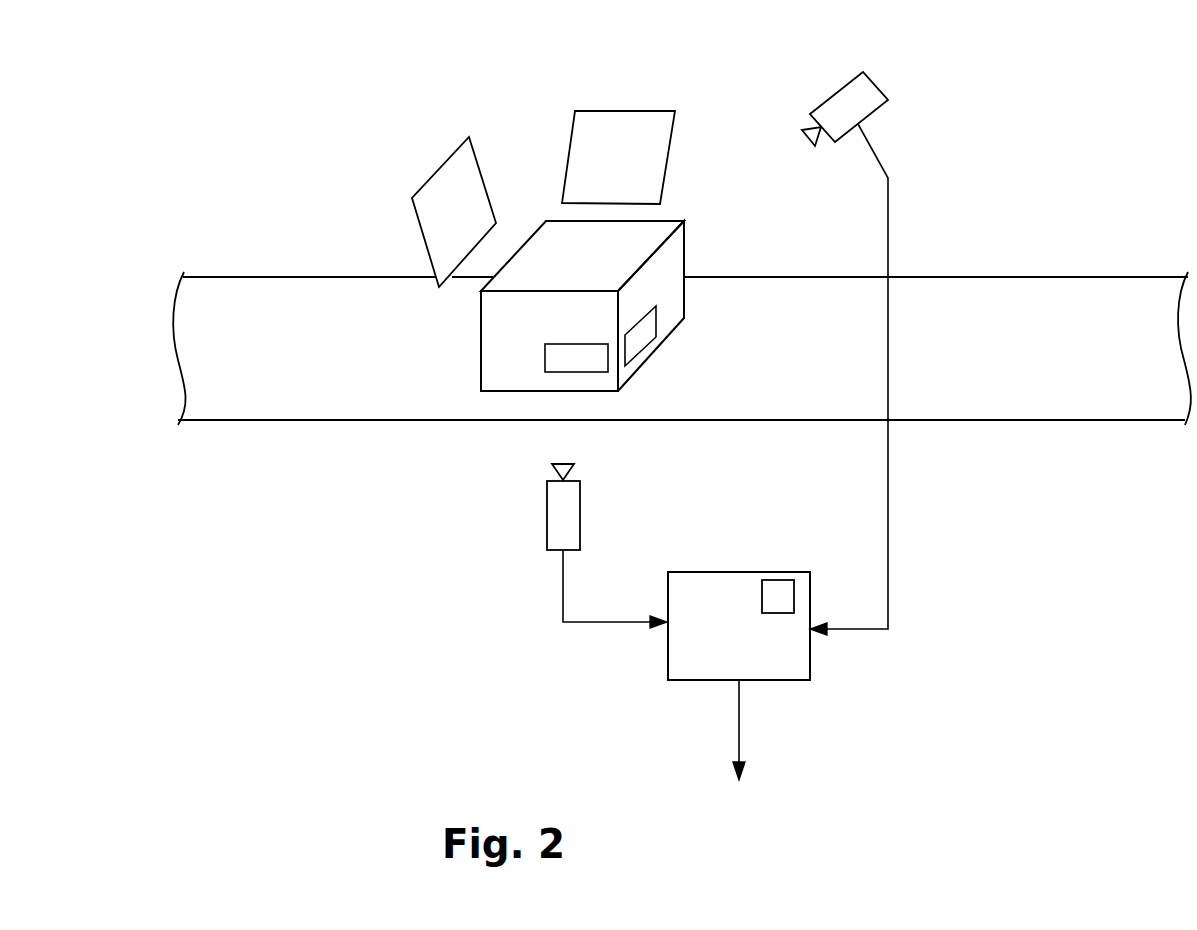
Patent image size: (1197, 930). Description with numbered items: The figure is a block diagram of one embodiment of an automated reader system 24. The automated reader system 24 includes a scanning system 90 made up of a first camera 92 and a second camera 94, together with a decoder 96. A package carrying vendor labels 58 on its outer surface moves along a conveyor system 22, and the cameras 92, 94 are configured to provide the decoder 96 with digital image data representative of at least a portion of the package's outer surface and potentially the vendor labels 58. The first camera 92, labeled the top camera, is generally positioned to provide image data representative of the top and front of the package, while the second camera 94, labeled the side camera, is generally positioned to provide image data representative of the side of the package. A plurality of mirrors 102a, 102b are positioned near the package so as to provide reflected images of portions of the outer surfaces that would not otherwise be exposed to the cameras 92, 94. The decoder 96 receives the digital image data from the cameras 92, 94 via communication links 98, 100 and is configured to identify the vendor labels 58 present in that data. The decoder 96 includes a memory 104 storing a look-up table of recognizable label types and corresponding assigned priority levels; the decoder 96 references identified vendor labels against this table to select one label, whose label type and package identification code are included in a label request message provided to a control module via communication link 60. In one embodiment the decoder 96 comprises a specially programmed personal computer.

The conveyor system 22 is at (310, 303).
The automated reader system 24 is at (1111, 110).
The vendor labels 58 is at (588, 362).
The mirror 102a is at (627, 111).
The mirror 102b is at (443, 165).
The first camera 92 is at (882, 90).
The second camera 94 is at (580, 513).
The decoder 96 is at (668, 663).
The communication link 98 is at (888, 518).
The communication link 100 is at (563, 587).
The memory 104 is at (778, 580).
The communication link 60 is at (739, 715).
The scanning system 90 is at (493, 662).